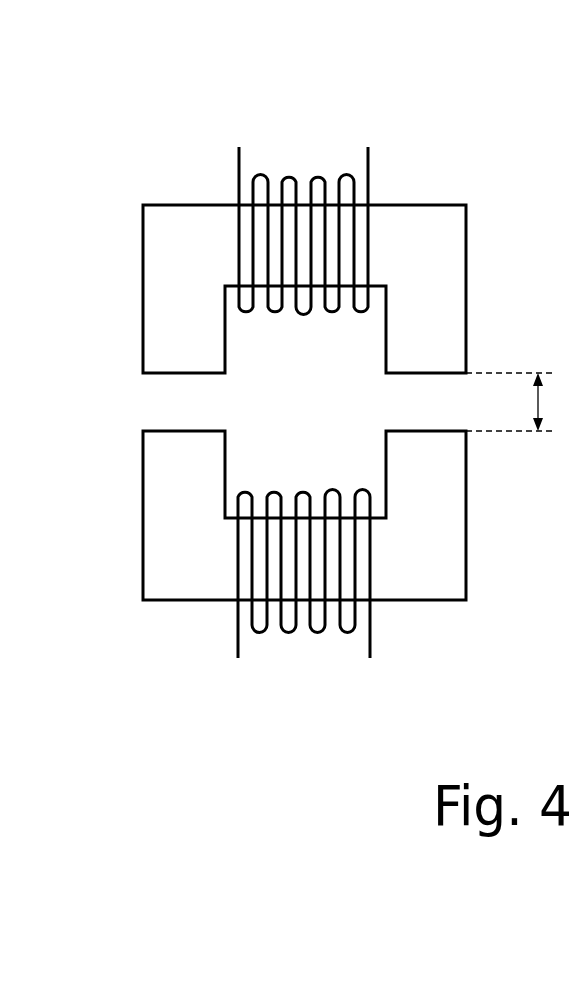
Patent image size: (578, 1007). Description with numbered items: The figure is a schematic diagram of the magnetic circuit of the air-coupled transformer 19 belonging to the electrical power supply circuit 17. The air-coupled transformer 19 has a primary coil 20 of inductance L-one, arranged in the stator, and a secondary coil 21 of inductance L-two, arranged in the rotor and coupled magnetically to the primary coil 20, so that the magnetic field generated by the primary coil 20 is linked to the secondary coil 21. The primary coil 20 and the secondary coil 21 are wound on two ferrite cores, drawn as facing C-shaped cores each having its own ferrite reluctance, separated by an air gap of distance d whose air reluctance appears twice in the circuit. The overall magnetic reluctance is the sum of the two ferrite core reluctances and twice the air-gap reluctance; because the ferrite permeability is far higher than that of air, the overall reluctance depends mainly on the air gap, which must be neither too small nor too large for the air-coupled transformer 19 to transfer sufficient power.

The electrical power supply circuit 17 is at (0, 870).
The air-coupled transformer 19 is at (124, 105).
The primary coil 20 is at (297, 147).
The secondary coil 21 is at (283, 658).